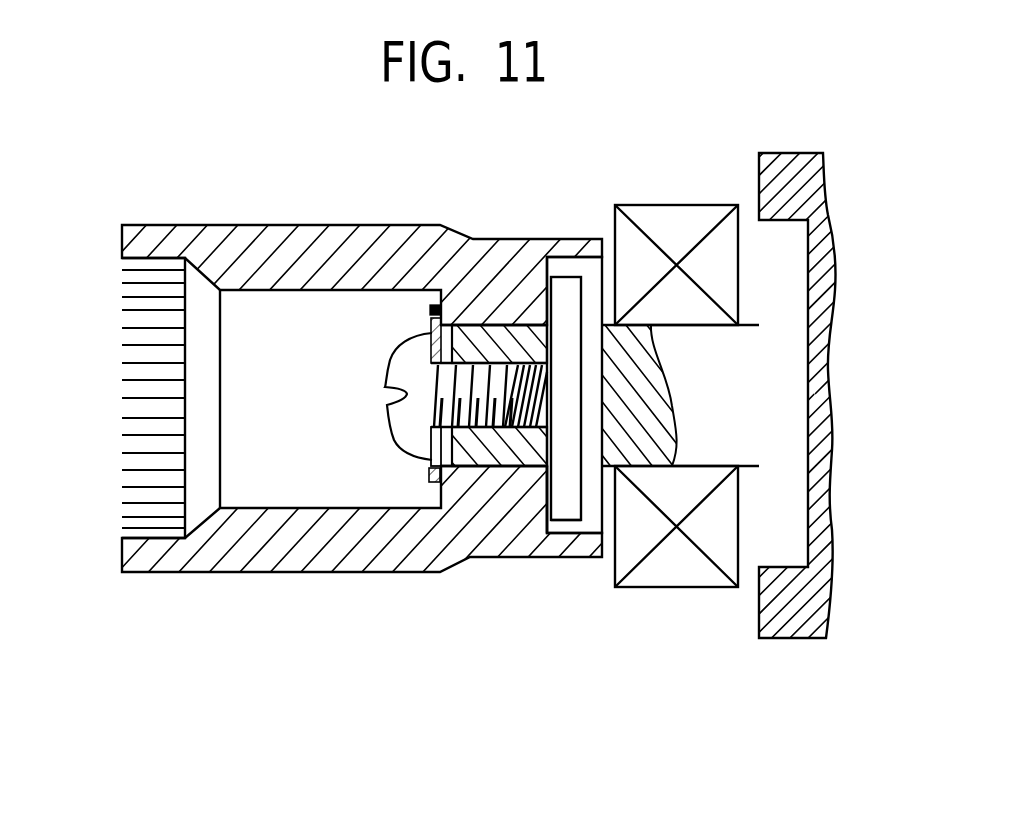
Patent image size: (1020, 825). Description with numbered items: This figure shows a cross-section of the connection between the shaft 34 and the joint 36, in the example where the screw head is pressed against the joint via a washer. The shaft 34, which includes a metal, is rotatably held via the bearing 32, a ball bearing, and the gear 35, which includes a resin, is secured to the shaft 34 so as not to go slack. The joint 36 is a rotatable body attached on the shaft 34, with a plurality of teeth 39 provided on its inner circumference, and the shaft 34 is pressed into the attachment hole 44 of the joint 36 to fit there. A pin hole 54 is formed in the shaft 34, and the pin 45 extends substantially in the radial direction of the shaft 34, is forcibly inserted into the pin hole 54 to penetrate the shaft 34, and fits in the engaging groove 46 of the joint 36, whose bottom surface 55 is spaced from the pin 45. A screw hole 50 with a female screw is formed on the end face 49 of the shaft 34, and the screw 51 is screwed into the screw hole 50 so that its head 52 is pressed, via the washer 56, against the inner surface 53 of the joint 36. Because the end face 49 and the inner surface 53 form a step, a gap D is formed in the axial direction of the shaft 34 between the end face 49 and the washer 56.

The bearing 32 is at (672, 588).
The shaft 34 is at (553, 506).
The gear 35 is at (830, 600).
The joint 36 is at (306, 225).
The teeth 39 is at (122, 335).
The attachment hole 44 is at (517, 326).
The pin 45 is at (589, 290).
The engaging groove 46 is at (572, 257).
The end face 49 is at (431, 345).
The screw hole 50 is at (494, 424).
The screw 51 is at (487, 373).
The head 52 is at (386, 394).
The inner surface 53 is at (430, 310).
The pin hole 54 is at (576, 398).
The bottom surface 55 is at (556, 522).
The washer 56 is at (431, 322).
The gap D is at (477, 445).